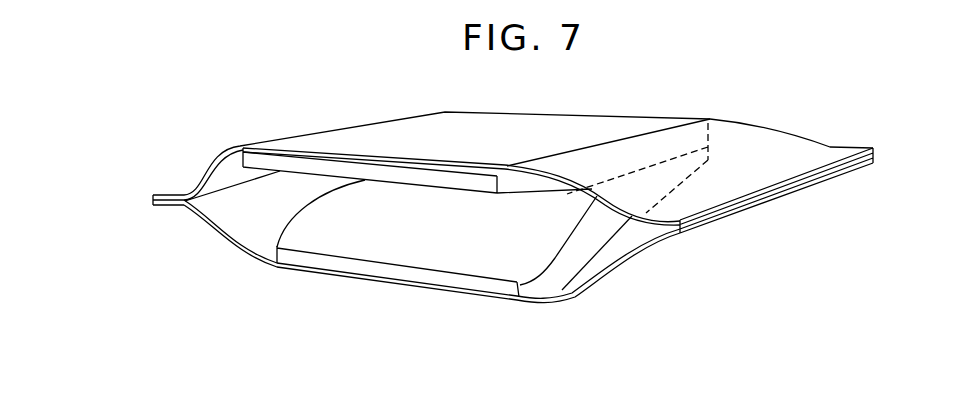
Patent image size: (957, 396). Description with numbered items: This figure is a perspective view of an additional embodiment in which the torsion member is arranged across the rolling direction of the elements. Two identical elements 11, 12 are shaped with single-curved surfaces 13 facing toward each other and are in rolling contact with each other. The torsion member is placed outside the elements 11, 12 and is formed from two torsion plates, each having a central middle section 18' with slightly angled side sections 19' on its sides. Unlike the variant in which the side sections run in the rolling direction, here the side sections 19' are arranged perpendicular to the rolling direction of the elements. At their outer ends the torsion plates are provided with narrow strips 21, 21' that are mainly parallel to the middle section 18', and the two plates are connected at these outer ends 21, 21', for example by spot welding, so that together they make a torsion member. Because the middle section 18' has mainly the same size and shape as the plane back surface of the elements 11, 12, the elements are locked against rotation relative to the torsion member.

The element 11 is at (345, 166).
The element 12 is at (432, 279).
The single-curved surface 13 is at (363, 255).
The middle section 18' is at (528, 185).
The side section 19' is at (509, 199).
The narrow strip 21 is at (165, 161).
The narrow strip 21' is at (776, 197).